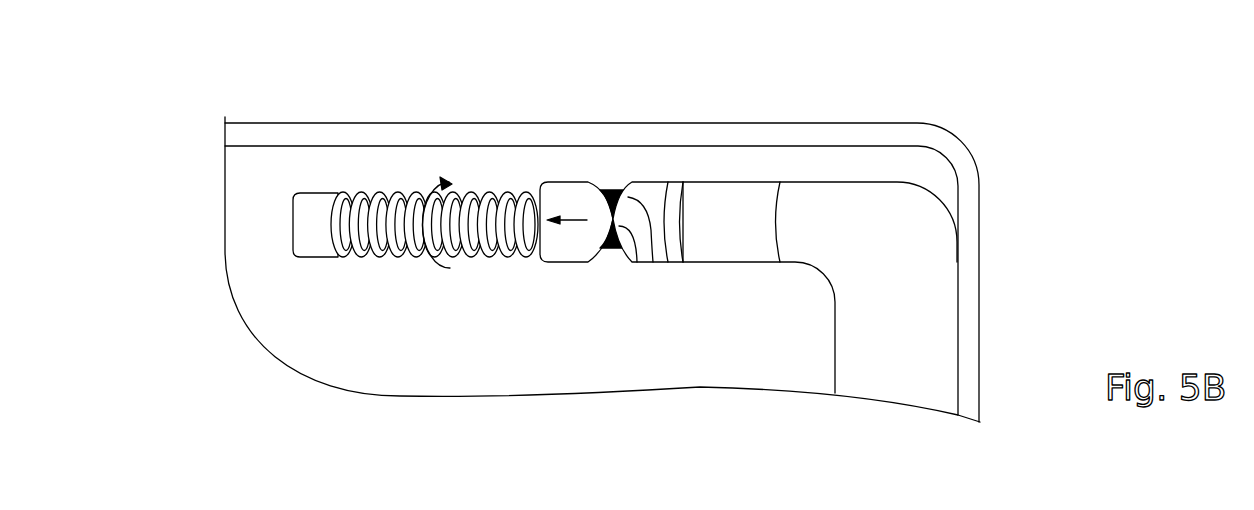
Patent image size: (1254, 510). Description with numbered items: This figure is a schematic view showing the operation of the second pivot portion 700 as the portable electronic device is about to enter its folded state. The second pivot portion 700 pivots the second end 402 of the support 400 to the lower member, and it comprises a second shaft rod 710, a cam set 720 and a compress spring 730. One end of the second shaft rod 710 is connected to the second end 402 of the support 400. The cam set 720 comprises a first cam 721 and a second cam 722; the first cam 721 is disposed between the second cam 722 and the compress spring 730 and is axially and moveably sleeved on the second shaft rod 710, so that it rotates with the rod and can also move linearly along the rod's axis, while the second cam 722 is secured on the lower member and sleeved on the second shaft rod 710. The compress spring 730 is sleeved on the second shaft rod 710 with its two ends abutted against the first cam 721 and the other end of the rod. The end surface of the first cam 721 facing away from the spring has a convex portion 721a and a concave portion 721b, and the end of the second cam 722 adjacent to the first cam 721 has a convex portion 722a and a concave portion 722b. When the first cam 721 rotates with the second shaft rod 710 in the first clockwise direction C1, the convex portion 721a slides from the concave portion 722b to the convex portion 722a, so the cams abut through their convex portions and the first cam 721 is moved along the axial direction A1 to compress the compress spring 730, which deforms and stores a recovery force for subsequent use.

The support 400 is at (970, 342).
The second end 402 is at (925, 262).
The second pivot portion 700 is at (680, 35).
The compress spring 730 is at (368, 198).
The second shaft rod 710 is at (395, 193).
The cam set 720 is at (708, 80).
The first cam 721 is at (560, 217).
The convex portion 721a is at (585, 247).
The concave portion 721b is at (581, 262).
The second cam 722 is at (780, 238).
The convex portion 722a is at (633, 262).
The concave portion 722b is at (655, 262).
The axial direction A1 is at (568, 220).
The first clockwise direction C1 is at (437, 245).